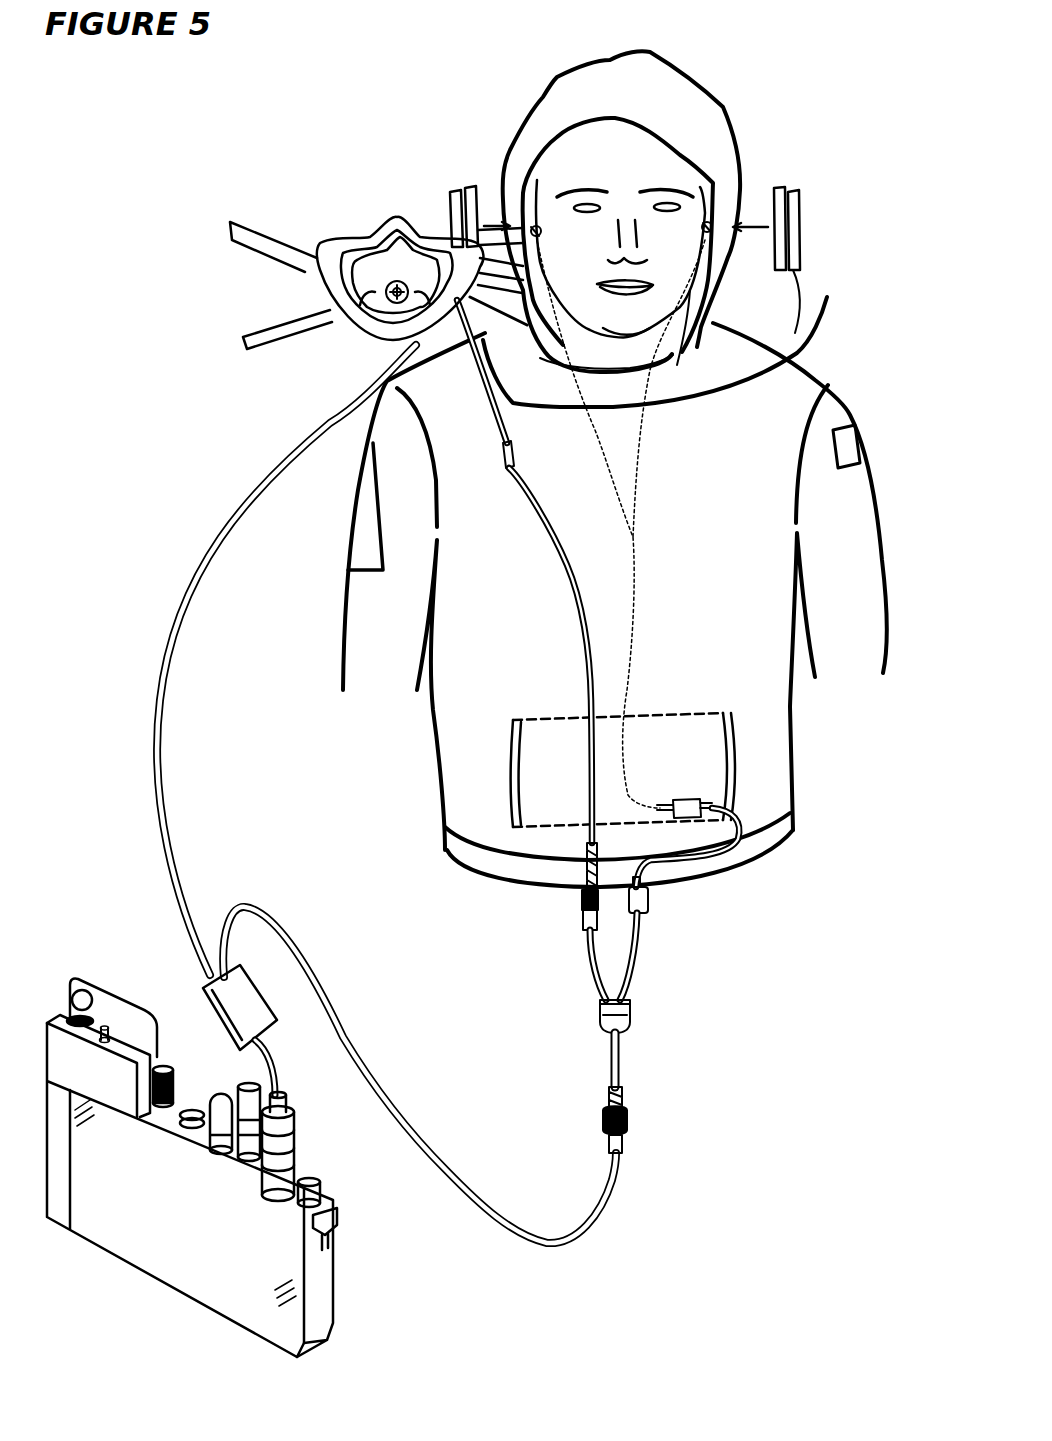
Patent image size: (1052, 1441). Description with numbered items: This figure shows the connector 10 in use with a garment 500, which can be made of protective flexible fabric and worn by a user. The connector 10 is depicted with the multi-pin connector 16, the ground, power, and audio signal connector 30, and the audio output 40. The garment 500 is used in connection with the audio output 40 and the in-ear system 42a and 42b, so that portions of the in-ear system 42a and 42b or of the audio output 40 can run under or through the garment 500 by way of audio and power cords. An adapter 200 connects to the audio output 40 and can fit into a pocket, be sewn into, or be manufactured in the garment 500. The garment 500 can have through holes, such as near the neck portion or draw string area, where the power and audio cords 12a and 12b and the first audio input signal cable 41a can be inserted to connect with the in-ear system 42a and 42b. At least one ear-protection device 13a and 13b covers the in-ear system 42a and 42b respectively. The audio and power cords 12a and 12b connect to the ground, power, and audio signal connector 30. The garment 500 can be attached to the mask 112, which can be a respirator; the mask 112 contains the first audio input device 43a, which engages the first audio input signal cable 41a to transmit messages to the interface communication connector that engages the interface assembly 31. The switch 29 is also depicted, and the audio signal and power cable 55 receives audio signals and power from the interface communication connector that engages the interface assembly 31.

The connector 10 is at (576, 1038).
The audio and power cord 12a is at (498, 408).
The audio and power cord 12b is at (797, 293).
The ear-protection device 13a is at (472, 186).
The ear-protection device 13b is at (790, 190).
The multi-pin connector 16 is at (625, 1100).
The switch 29 is at (245, 990).
The ground, power, and audio signal connector 30 is at (583, 900).
The interface assembly 31 is at (156, 1270).
The audio output 40 is at (650, 905).
The first audio input signal cable 41a is at (305, 447).
The in-ear system 42a is at (533, 229).
The in-ear system 42b is at (710, 232).
The first audio input device 43a is at (396, 283).
The audio signal and power cable 55 is at (560, 1248).
The mask 112 is at (327, 327).
The adapter 200 is at (684, 801).
The garment 500 is at (736, 178).